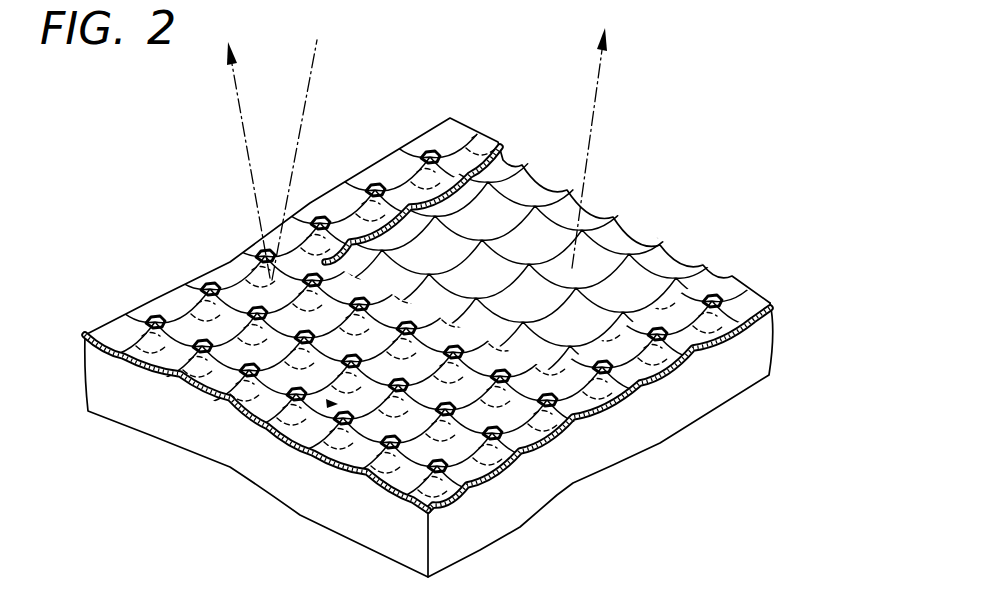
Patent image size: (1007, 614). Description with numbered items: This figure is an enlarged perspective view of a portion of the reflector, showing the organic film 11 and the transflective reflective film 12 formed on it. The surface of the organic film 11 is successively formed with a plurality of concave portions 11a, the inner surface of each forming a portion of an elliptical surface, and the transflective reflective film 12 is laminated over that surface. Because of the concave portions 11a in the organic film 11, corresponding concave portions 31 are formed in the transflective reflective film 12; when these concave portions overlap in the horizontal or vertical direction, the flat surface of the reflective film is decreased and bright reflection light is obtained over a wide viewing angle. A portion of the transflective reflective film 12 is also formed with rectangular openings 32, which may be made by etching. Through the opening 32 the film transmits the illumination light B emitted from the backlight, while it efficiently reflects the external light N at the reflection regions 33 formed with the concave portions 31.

The organic film 11 is at (668, 420).
The concave portions 11a is at (675, 263).
The transflective reflective film 12 is at (770, 360).
The concave portions 31 is at (183, 392).
The rectangular openings 32 is at (499, 146).
The reflection regions 33 is at (280, 427).
The external light N is at (300, 117).
The illumination light B is at (593, 139).